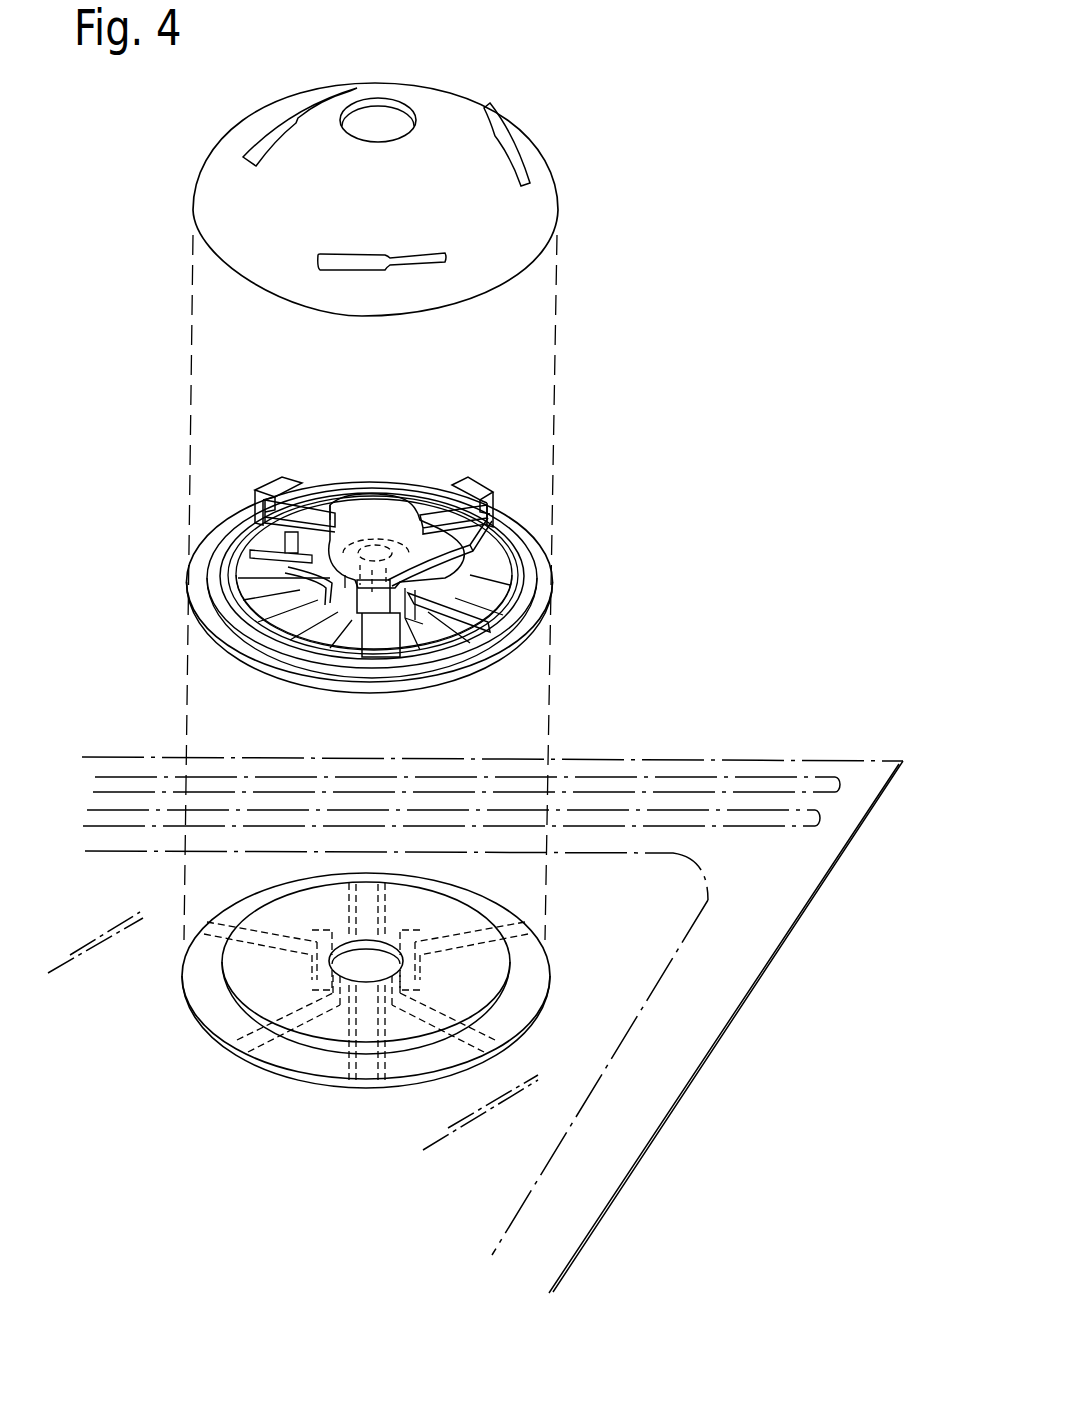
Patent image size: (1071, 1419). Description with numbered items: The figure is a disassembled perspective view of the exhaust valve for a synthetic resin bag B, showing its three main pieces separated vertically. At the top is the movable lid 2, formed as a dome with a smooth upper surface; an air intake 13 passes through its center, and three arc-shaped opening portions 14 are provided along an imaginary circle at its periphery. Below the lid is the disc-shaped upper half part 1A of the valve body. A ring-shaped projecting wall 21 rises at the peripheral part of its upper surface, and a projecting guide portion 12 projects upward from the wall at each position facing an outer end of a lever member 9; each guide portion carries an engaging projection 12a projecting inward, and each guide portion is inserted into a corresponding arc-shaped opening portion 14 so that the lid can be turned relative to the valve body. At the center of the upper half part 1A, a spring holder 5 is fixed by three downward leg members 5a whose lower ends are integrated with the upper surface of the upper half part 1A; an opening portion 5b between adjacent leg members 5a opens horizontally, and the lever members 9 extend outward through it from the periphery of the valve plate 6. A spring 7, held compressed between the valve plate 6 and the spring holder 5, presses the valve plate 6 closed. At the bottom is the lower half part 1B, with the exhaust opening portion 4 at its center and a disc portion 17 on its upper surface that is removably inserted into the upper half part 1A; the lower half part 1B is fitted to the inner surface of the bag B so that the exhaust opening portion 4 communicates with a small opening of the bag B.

The movable lid 2 is at (423, 100).
The air intake 13 is at (380, 113).
The arc-shaped opening portions 14 is at (277, 128).
The upper half part 1A is at (552, 606).
The ring-shaped projecting wall 21 is at (222, 590).
The valve plate 6 is at (230, 593).
The spring holder 5 is at (382, 515).
The spring 7 is at (377, 545).
The lever members 9 is at (305, 513).
The projecting guide portion 12 is at (253, 498).
The engaging projection 12a is at (280, 488).
The leg members 5a is at (465, 540).
The opening portion 5b is at (507, 642).
The bag B is at (638, 1130).
The lower half part 1B is at (533, 960).
The disc portion 17 is at (493, 947).
The exhaust opening portion 4 is at (373, 957).